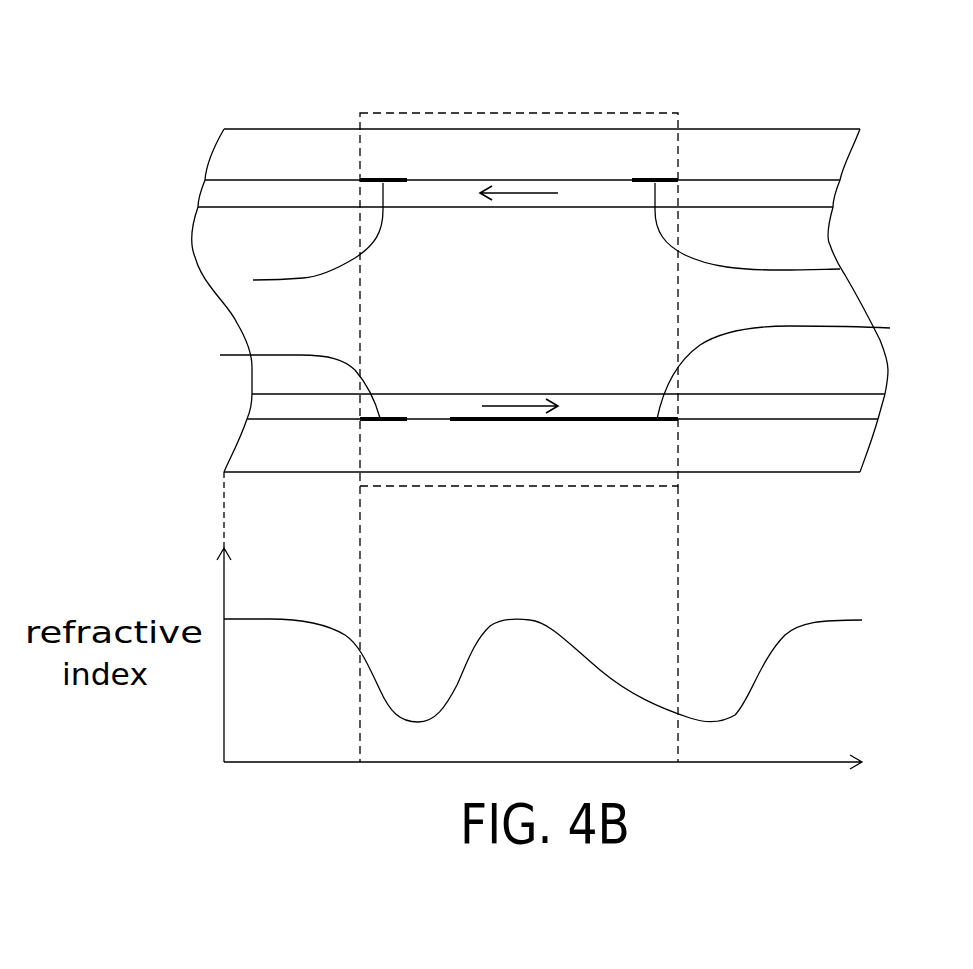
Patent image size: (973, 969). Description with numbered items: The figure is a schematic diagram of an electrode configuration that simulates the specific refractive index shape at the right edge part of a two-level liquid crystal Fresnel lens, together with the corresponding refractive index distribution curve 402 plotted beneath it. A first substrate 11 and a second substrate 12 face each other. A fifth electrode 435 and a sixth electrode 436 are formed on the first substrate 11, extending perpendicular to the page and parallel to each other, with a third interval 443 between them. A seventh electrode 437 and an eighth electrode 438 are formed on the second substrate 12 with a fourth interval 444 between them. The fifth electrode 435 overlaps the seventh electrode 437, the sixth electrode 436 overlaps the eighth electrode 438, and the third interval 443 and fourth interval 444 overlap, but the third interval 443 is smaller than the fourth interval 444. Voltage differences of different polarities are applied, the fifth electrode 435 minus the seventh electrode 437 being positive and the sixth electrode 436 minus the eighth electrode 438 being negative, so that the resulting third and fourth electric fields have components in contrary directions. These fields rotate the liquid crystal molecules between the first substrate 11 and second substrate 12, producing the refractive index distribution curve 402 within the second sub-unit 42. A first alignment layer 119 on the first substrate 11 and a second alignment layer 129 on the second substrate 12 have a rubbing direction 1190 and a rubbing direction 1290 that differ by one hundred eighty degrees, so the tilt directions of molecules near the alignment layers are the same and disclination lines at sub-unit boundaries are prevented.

The first substrate 11 is at (248, 445).
The second substrate 12 is at (230, 155).
The first alignment layer 119 is at (260, 403).
The second alignment layer 129 is at (215, 193).
The second sub-unit 42 is at (392, 113).
The refractive index distribution curve 402 is at (528, 620).
The fifth electrode 435 is at (220, 355).
The sixth electrode 436 is at (890, 328).
The seventh electrode 437 is at (253, 280).
The eighth electrode 438 is at (840, 269).
The third interval 443 is at (423, 420).
The fourth interval 444 is at (608, 180).
The rubbing direction 1190 is at (518, 407).
The rubbing direction 1290 is at (522, 193).